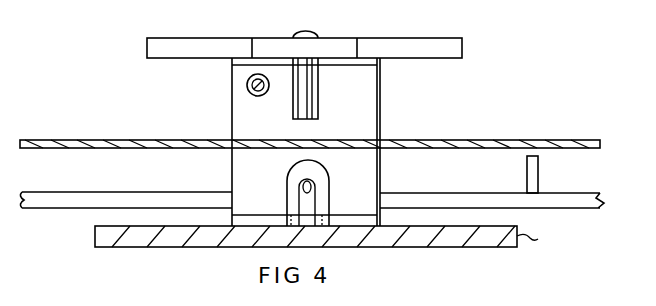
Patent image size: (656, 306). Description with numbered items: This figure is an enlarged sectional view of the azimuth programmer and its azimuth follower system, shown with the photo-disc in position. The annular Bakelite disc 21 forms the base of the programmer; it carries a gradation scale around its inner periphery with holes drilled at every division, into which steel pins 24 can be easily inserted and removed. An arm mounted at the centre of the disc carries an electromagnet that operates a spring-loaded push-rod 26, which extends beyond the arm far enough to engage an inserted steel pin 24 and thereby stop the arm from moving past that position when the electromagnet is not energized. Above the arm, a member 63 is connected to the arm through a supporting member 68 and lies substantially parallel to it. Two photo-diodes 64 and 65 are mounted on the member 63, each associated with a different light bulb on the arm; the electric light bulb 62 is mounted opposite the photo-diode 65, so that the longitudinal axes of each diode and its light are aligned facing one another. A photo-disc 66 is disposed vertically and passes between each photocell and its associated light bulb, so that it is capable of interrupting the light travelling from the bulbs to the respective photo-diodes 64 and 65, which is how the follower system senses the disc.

The Bakelite disc 21 is at (92, 196).
The steel pin 24 is at (534, 171).
The push-rod 26 is at (247, 86).
The electric light bulb 62 is at (330, 184).
The member 63 is at (412, 48).
The photo-diode 64 is at (311, 106).
The photo-diode 65 is at (320, 77).
The photo-disc 66 is at (447, 141).
The supporting member 68 is at (371, 170).